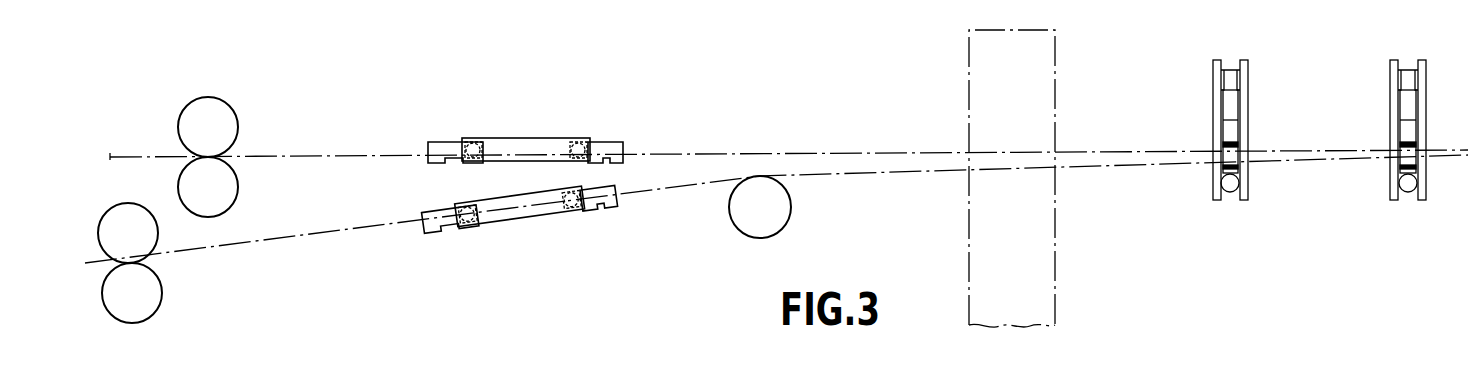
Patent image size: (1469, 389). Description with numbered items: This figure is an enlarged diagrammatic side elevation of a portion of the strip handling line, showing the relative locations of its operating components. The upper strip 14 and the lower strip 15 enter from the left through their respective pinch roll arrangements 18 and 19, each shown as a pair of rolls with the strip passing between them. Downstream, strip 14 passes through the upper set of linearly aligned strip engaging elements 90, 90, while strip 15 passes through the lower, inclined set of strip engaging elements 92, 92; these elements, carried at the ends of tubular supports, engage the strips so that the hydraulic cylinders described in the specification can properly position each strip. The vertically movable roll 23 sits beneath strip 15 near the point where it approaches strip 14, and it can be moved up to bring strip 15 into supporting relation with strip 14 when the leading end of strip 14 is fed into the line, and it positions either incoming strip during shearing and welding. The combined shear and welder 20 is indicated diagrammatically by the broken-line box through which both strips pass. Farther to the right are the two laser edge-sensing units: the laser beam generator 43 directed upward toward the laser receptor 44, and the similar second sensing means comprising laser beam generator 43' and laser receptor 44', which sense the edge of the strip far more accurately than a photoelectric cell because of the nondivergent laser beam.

The strip 14 is at (778, 152).
The strip 15 is at (835, 175).
The pinch roll arrangement 18 is at (235, 107).
The pinch roll arrangement 19 is at (137, 207).
The combined shear and welder 20 is at (1055, 87).
The vertically movable roll 23 is at (748, 223).
The laser beam generator 43 is at (1402, 210).
The laser beam generator 43' is at (1232, 210).
The laser receptor 44 is at (1408, 109).
The laser receptor 44' is at (1230, 109).
The strip engaging element 90 is at (442, 145).
The strip engaging element 92 is at (427, 233).